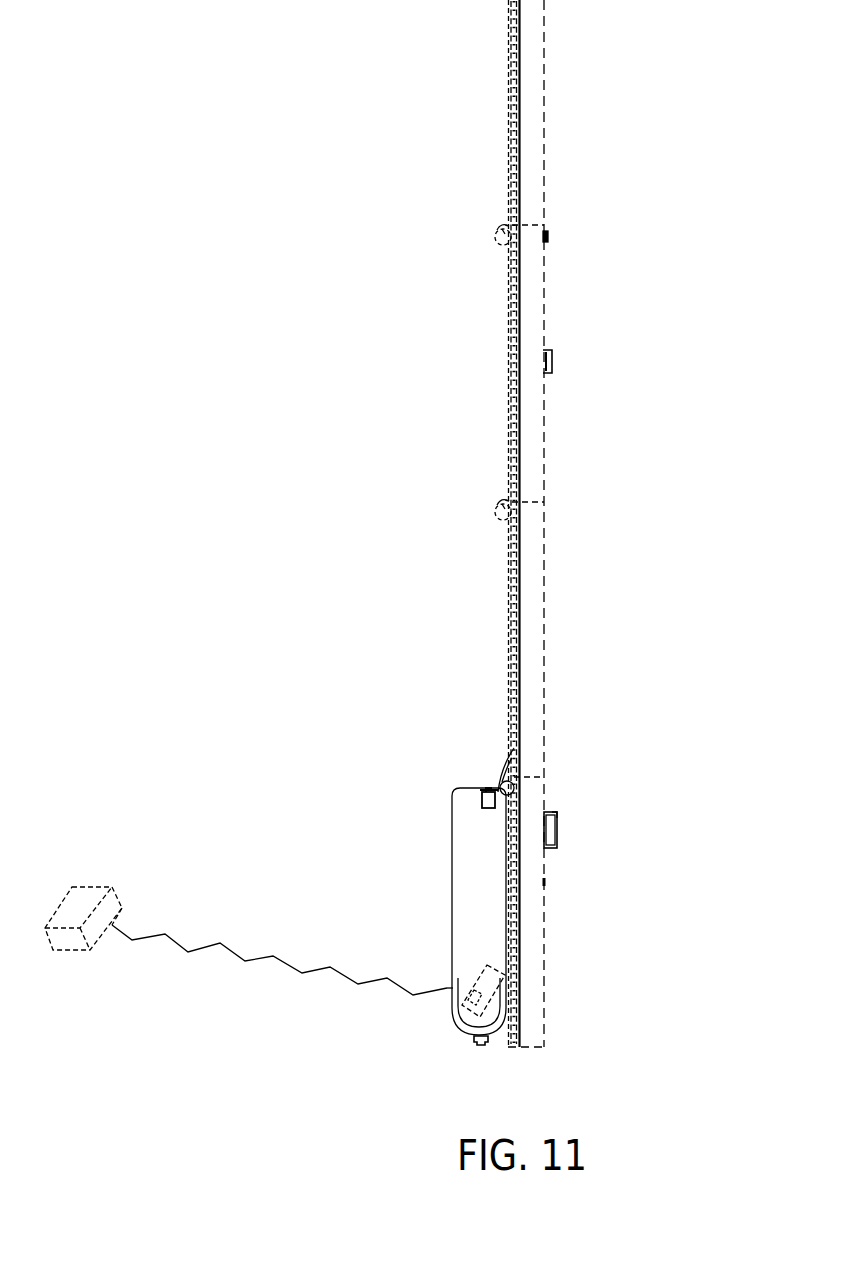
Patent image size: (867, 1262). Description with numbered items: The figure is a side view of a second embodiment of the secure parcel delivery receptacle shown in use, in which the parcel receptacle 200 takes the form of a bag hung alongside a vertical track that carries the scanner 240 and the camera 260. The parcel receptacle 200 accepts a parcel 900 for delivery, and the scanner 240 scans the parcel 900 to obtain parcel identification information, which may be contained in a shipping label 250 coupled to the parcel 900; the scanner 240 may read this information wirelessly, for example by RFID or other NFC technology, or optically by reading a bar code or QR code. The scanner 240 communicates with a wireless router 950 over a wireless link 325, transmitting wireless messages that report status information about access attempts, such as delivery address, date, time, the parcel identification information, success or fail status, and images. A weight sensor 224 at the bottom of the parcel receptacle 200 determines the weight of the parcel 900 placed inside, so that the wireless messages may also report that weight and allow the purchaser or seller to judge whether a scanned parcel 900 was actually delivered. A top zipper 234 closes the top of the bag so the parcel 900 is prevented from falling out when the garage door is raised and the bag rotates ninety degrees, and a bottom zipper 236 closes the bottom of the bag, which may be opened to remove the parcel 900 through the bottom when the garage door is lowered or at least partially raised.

The parcel receptacle 200 is at (452, 826).
The weight sensor 224 is at (465, 1031).
The top zipper 234 is at (483, 788).
The bottom zipper 236 is at (480, 1045).
The scanner 240 is at (557, 830).
The shipping label 250 is at (452, 1003).
The camera 260 is at (552, 360).
The wireless link 325 is at (188, 952).
The parcel 900 is at (484, 966).
The wireless router 950 is at (70, 887).